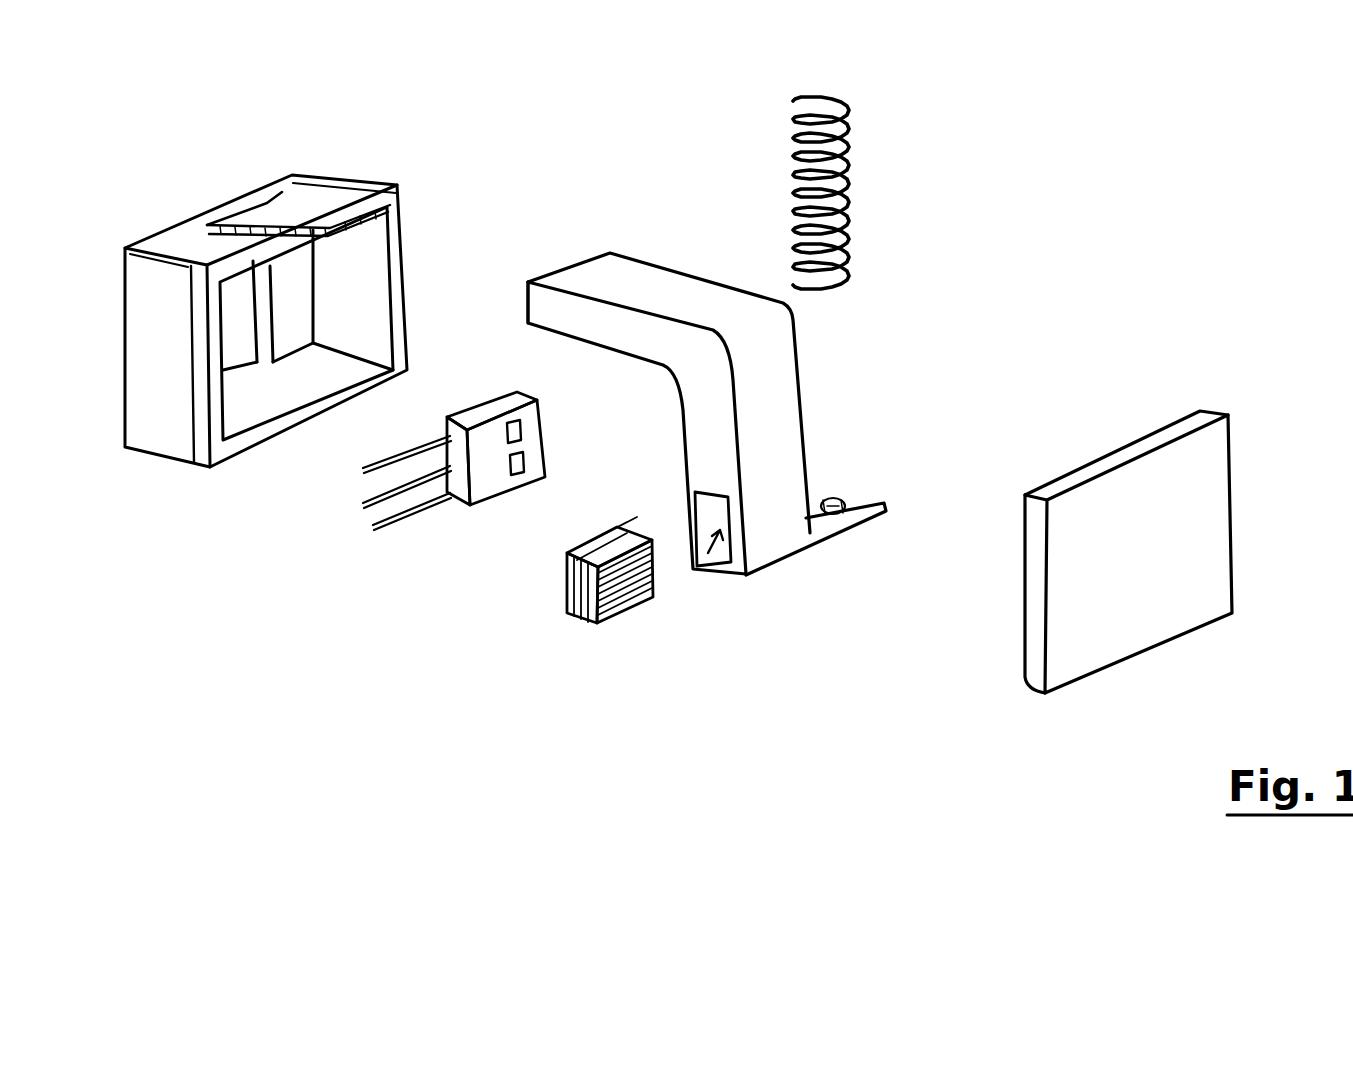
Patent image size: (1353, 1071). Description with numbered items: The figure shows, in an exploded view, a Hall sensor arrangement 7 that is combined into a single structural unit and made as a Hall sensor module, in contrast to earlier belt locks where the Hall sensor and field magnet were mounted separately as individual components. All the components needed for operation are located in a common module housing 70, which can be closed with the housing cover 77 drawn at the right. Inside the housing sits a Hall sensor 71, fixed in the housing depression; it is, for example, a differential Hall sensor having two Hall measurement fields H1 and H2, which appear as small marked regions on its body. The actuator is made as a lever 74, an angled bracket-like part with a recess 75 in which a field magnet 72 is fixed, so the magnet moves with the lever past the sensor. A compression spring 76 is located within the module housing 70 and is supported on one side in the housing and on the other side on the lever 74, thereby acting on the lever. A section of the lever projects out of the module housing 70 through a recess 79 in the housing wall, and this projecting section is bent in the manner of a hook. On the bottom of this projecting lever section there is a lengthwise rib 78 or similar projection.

The Hall sensor arrangement 7 is at (1097, 193).
The module housing 70 is at (152, 242).
The Hall sensor 71 is at (487, 500).
The field magnet 72 is at (563, 613).
The lever 74 is at (706, 302).
The recess 75 is at (707, 557).
The compression spring 76 is at (842, 178).
The housing cover 77 is at (1211, 470).
The lengthwise rib 78 is at (573, 347).
The recess 79 is at (258, 223).
The Hall measurement field H1 is at (523, 430).
The Hall measurement field H2 is at (523, 470).